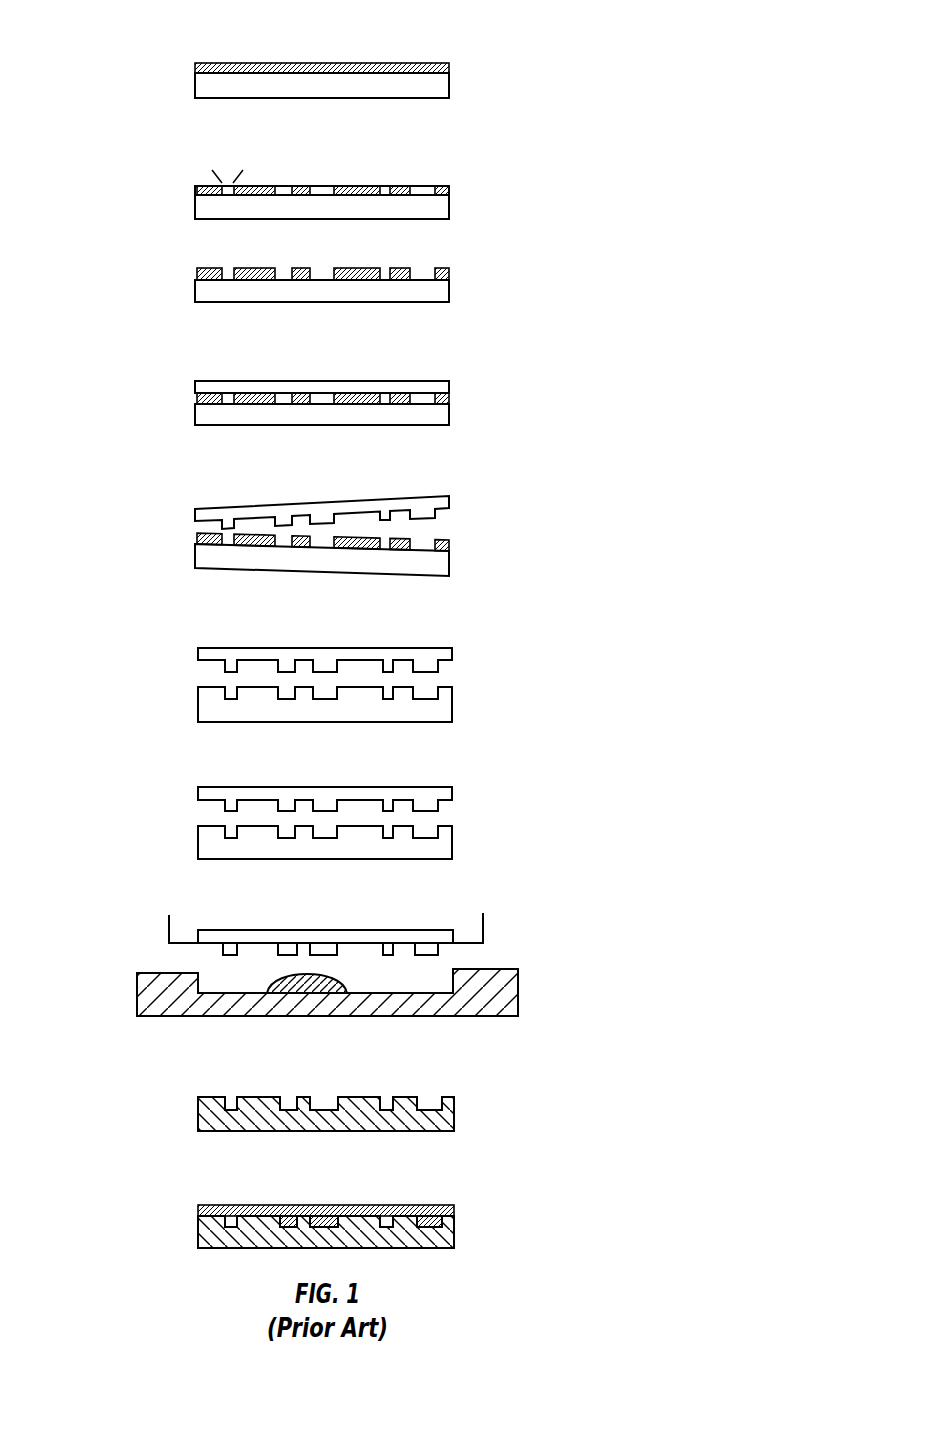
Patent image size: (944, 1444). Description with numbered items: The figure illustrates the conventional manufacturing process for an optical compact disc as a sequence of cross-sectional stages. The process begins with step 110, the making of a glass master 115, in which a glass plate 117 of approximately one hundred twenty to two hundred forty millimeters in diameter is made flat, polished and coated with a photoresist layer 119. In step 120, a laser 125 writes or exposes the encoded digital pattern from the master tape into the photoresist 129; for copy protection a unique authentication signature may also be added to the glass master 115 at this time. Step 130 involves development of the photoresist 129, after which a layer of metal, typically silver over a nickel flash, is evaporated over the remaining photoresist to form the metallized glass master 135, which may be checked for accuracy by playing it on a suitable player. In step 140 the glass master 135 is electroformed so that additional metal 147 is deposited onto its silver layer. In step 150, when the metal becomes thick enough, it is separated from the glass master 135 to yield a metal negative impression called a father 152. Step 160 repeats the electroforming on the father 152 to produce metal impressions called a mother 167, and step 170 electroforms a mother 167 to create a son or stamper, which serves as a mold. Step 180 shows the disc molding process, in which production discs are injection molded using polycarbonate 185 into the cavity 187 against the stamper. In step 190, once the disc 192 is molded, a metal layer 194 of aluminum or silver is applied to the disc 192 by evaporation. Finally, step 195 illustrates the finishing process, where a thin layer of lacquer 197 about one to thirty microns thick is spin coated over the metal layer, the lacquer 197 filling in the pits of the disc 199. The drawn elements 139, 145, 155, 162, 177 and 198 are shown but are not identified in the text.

The glass master making step 110 is at (158, 70).
The glass master 115 is at (450, 82).
The glass plate 117 is at (430, 88).
The photoresist layer 119 is at (395, 63).
The writing step 120 is at (158, 192).
The laser 125 is at (310, 173).
The photoresist 129 is at (448, 185).
The development step 130 is at (158, 280).
The remaining coating features 139 is at (402, 262).
The glass master 135 is at (430, 292).
The electroforming step 140 is at (158, 393).
The additional metal 147 is at (245, 382).
The master substrate base 145 is at (430, 413).
The separation step 150 is at (158, 517).
The father 152 is at (427, 508).
The patterned master 155 is at (430, 567).
The mother electroforming step 160 is at (160, 667).
The mold 162 is at (427, 657).
The mother 167 is at (430, 708).
The stamper electroforming step 170 is at (160, 810).
The replica substrate 177 is at (430, 848).
The disc molding step 180 is at (103, 952).
The polycarbonate 185 is at (345, 983).
The cavity 187 is at (438, 985).
The metallizing step 190 is at (162, 1103).
The disc 192 is at (453, 1108).
The metal layer 194 is at (362, 1115).
The finishing step 195 is at (162, 1217).
The lacquer layer 197 is at (277, 1205).
The ink filled grooves 198 is at (387, 1206).
The disc 199 is at (280, 1237).